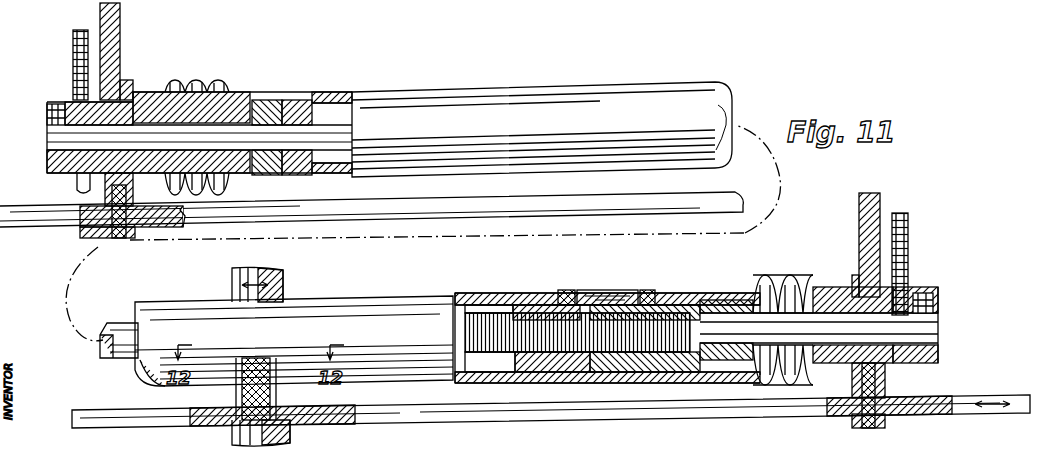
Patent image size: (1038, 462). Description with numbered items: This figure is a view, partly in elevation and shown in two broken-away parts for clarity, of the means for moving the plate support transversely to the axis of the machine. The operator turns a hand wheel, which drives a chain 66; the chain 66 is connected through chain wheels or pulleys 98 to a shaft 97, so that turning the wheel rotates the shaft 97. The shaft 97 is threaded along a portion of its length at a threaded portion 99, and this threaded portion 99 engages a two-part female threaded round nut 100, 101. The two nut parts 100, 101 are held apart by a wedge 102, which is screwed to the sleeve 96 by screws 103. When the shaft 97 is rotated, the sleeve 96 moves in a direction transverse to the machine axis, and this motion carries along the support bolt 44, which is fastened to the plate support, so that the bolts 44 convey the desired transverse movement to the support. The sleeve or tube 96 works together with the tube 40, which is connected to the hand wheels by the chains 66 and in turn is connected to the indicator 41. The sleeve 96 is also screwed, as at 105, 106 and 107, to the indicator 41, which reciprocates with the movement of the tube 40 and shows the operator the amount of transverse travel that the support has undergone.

The tube 40 is at (585, 71).
The indicator 41 is at (604, 196).
The support bolt 44 is at (283, 284).
The chain 66 is at (72, 40).
The sleeve 96 is at (512, 88).
The shaft 97 is at (312, 108).
The chain wheel 98 is at (46, 103).
The threaded portion 99 is at (693, 303).
The nut 100 is at (545, 304).
The nut 101 is at (670, 303).
The wedge 102 is at (613, 292).
The screw 103 is at (568, 291).
The screw 105 is at (245, 420).
The screw 106 is at (118, 238).
The screw 107 is at (856, 416).